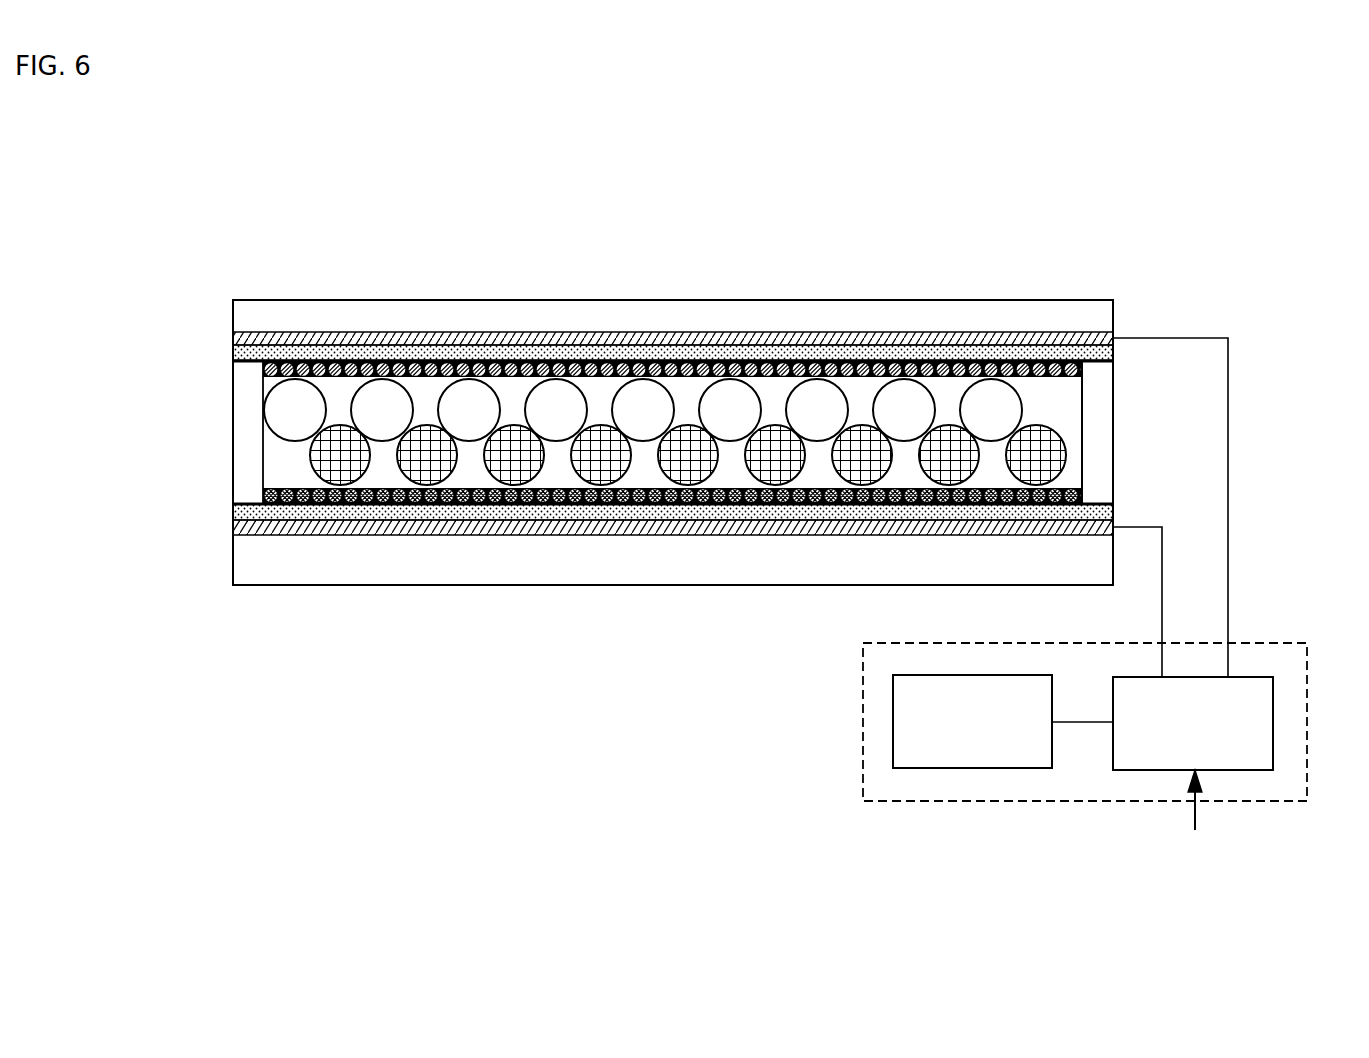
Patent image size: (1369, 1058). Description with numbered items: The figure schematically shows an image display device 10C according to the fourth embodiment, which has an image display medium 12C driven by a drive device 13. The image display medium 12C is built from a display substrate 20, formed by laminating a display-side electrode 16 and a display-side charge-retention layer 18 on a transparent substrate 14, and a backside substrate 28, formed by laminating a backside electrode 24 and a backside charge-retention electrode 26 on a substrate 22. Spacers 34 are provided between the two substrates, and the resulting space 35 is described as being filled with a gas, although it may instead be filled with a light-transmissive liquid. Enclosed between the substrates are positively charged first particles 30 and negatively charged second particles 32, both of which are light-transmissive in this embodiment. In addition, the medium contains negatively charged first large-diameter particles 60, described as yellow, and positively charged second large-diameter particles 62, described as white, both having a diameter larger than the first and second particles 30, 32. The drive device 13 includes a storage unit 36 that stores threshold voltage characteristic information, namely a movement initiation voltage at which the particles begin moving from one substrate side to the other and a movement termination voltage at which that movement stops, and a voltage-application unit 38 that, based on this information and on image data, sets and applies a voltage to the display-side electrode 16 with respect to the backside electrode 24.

The image display device 10C is at (788, 176).
The image display medium 12C is at (827, 278).
The drive device 13 is at (928, 801).
The transparent substrate 14 is at (422, 312).
The display-side electrode 16 is at (473, 336).
The display-side charge-retention layer 18 is at (525, 353).
The display substrate 20 is at (543, 247).
The substrate 22 is at (395, 573).
The backside electrode 24 is at (432, 535).
The backside charge-retention electrode 26 is at (505, 509).
The backside substrate 28 is at (367, 656).
The first particles 30 is at (726, 368).
The second particles 32 is at (690, 505).
The spacers 34 is at (1098, 425).
The space 35 is at (1052, 394).
The storage unit 36 is at (893, 750).
The voltage-application unit 38 is at (1275, 735).
The first large-diameter particles 60 is at (845, 462).
The second large-diameter particles 62 is at (983, 398).